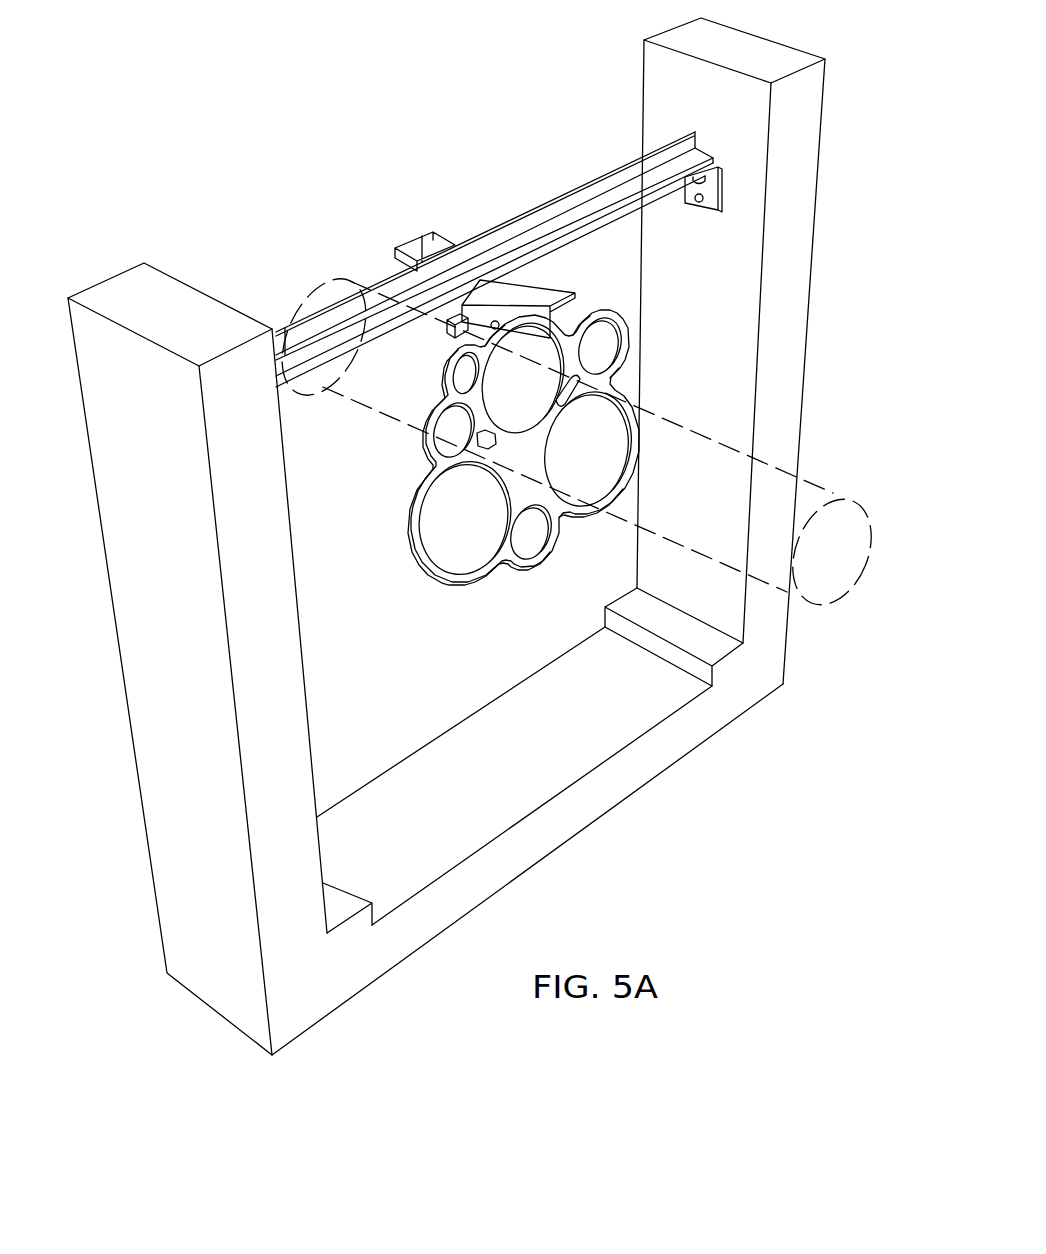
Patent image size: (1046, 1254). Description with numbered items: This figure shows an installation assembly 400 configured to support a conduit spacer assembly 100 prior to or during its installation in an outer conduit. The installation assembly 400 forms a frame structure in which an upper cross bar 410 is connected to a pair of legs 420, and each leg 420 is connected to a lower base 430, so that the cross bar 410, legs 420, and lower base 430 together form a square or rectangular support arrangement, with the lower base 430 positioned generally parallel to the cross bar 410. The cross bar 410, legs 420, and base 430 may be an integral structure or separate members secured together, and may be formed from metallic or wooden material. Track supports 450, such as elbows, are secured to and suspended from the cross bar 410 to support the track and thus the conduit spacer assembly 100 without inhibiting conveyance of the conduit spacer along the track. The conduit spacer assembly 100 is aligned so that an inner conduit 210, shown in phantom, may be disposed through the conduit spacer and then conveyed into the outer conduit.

The installation assembly 400 is at (389, 88).
The upper cross bar 410 is at (542, 205).
The legs 420 is at (160, 708).
The lower base 430 is at (610, 810).
The track supports 450 is at (552, 273).
The conduit spacer assembly 100 is at (379, 388).
The inner conduit 210 is at (708, 440).